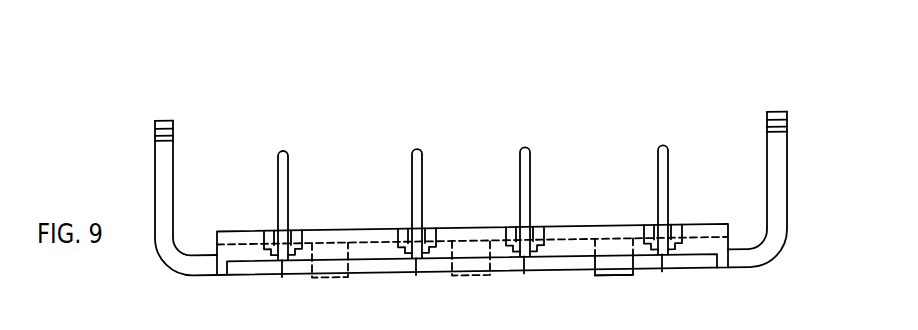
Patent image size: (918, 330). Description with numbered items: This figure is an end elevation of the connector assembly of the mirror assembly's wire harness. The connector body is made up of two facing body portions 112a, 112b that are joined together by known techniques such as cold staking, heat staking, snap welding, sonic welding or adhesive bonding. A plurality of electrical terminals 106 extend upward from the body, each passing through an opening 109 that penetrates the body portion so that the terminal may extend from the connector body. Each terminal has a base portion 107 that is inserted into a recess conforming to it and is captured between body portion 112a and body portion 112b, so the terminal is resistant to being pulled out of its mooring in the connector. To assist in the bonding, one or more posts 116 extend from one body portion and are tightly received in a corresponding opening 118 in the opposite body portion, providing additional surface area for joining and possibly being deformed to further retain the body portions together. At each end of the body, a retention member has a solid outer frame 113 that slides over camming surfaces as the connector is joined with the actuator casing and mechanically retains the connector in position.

The electrical terminal 106 is at (290, 152).
The base portion 107 is at (282, 276).
The opening 109 is at (275, 227).
The body portion 112a is at (577, 225).
The body portion 112b is at (703, 270).
The outer frame 113 is at (155, 118).
The post 116 is at (617, 276).
The opening 118 is at (595, 277).